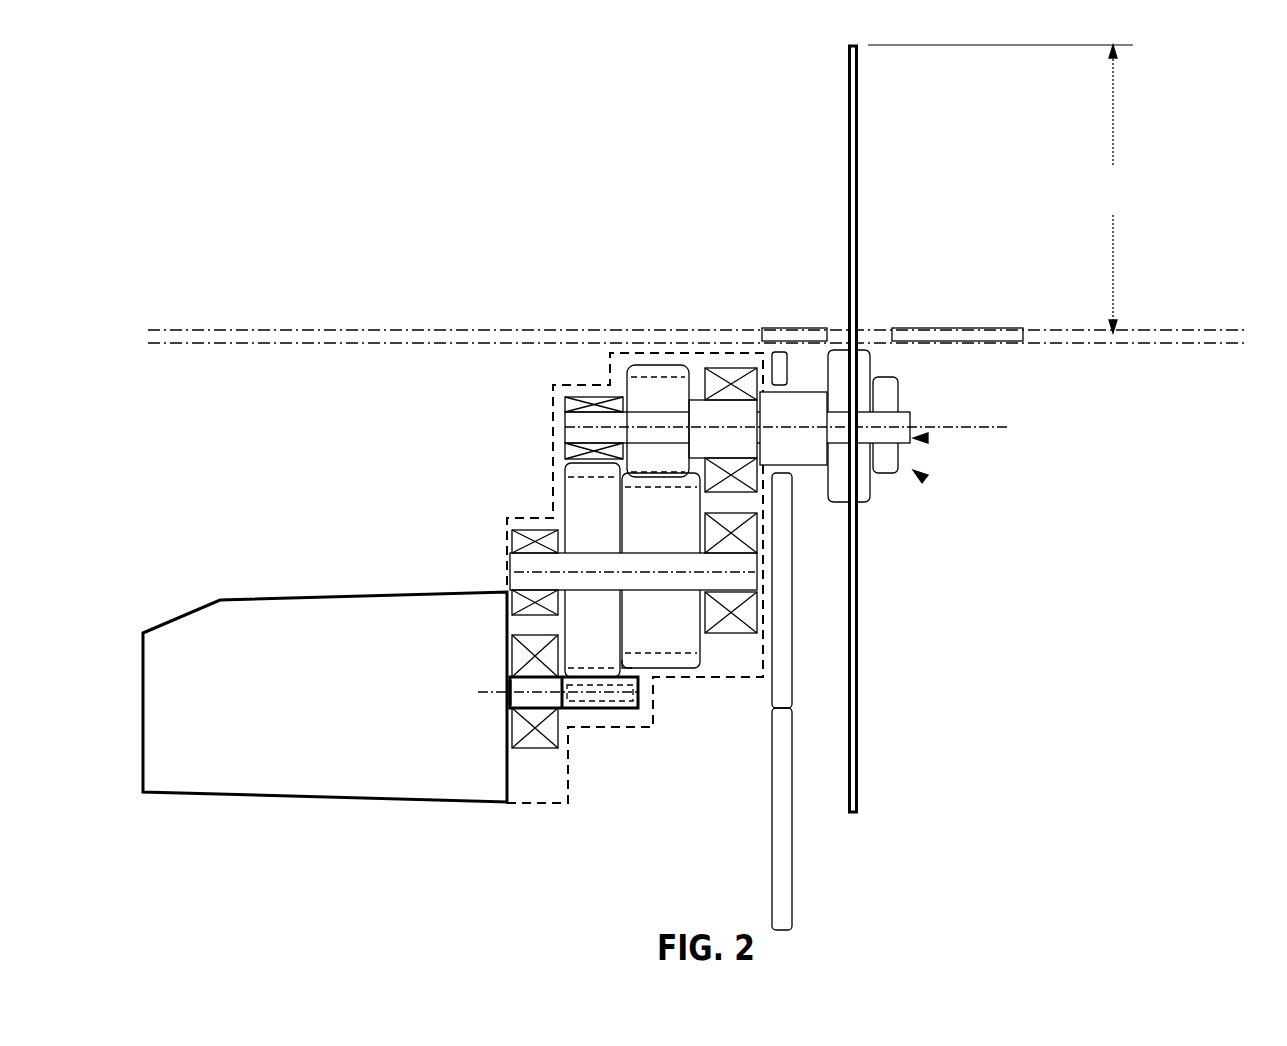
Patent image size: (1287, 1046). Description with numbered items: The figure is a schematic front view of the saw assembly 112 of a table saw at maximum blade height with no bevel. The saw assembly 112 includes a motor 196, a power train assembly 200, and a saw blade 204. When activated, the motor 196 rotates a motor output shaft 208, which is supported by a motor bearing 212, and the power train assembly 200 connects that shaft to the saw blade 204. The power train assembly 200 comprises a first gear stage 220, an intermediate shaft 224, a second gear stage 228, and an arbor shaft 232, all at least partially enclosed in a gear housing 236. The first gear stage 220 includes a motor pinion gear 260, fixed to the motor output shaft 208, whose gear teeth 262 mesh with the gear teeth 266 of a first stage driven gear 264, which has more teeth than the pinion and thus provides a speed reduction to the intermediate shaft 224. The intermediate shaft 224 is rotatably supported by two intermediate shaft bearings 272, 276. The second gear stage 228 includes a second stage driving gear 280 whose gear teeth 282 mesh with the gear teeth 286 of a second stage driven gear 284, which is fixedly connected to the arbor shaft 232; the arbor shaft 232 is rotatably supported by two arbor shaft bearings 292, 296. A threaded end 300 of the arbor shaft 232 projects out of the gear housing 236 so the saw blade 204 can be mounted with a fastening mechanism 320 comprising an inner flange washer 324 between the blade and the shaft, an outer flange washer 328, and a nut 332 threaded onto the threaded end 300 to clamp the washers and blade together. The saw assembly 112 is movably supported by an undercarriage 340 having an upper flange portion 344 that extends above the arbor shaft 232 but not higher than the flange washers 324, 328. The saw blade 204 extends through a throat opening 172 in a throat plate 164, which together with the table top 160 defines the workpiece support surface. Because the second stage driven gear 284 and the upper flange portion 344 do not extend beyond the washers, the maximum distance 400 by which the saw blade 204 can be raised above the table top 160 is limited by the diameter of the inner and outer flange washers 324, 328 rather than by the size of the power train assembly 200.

The saw assembly 112 is at (869, 518).
The table top 160 is at (1168, 330).
The throat plate 164 is at (915, 328).
The throat opening 172 is at (870, 320).
The motor 196 is at (313, 640).
The power train assembly 200 is at (530, 532).
The saw blade 204 is at (961, 429).
The motor output shaft 208 is at (507, 712).
The motor bearing 212 is at (533, 743).
The first gear stage 220 is at (587, 716).
The intermediate shaft 224 is at (512, 573).
The second gear stage 228 is at (665, 345).
The arbor shaft 232 is at (803, 400).
The gear housing 236 is at (553, 446).
The motor pinion gear 260 is at (607, 710).
The gear teeth 262 is at (582, 630).
The first stage driven gear 264 is at (624, 670).
The gear teeth 266 is at (565, 472).
The intermediate shaft bearing 272 is at (533, 533).
The intermediate shaft bearing 276 is at (737, 627).
The second stage driving gear 280 is at (655, 633).
The gear teeth 282 is at (657, 660).
The second stage driven gear 284 is at (657, 376).
The gear teeth 286 is at (639, 370).
The arbor shaft bearing 292 is at (576, 395).
The arbor shaft bearing 296 is at (731, 383).
The threaded end 300 is at (925, 438).
The fastening mechanism 320 is at (924, 478).
The inner flange washer 324 is at (843, 480).
The outer flange washer 328 is at (865, 480).
The nut 332 is at (890, 388).
The undercarriage 340 is at (783, 815).
The upper flange portion 344 is at (775, 352).
The maximum distance 400 is at (1001, 189).